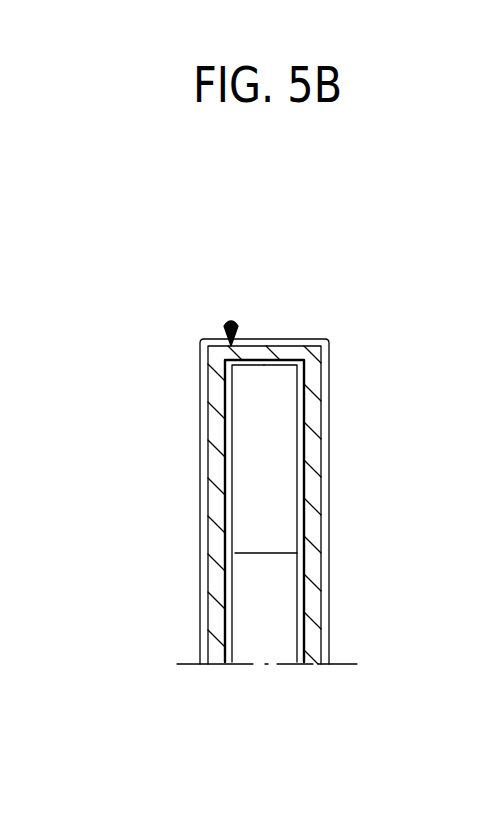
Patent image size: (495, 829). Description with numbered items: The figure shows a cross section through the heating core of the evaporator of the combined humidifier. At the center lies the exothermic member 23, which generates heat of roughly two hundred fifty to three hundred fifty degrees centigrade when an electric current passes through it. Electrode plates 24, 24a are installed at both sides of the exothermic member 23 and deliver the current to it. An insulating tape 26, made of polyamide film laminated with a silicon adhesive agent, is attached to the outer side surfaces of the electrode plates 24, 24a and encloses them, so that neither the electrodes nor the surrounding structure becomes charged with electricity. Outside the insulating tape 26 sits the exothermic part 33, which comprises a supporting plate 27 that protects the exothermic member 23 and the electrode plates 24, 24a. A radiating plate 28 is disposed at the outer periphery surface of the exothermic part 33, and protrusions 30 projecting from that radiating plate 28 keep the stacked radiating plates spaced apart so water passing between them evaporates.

The radiating plate 28 is at (356, 308).
The protrusion 30 is at (282, 341).
The supporting plate 27 is at (312, 388).
The insulating tape 26 is at (306, 460).
The electrode plate 24 is at (218, 583).
The electrode plate 24a is at (316, 595).
The exothermic member 23 is at (275, 512).
The exothermic part 33 is at (230, 320).